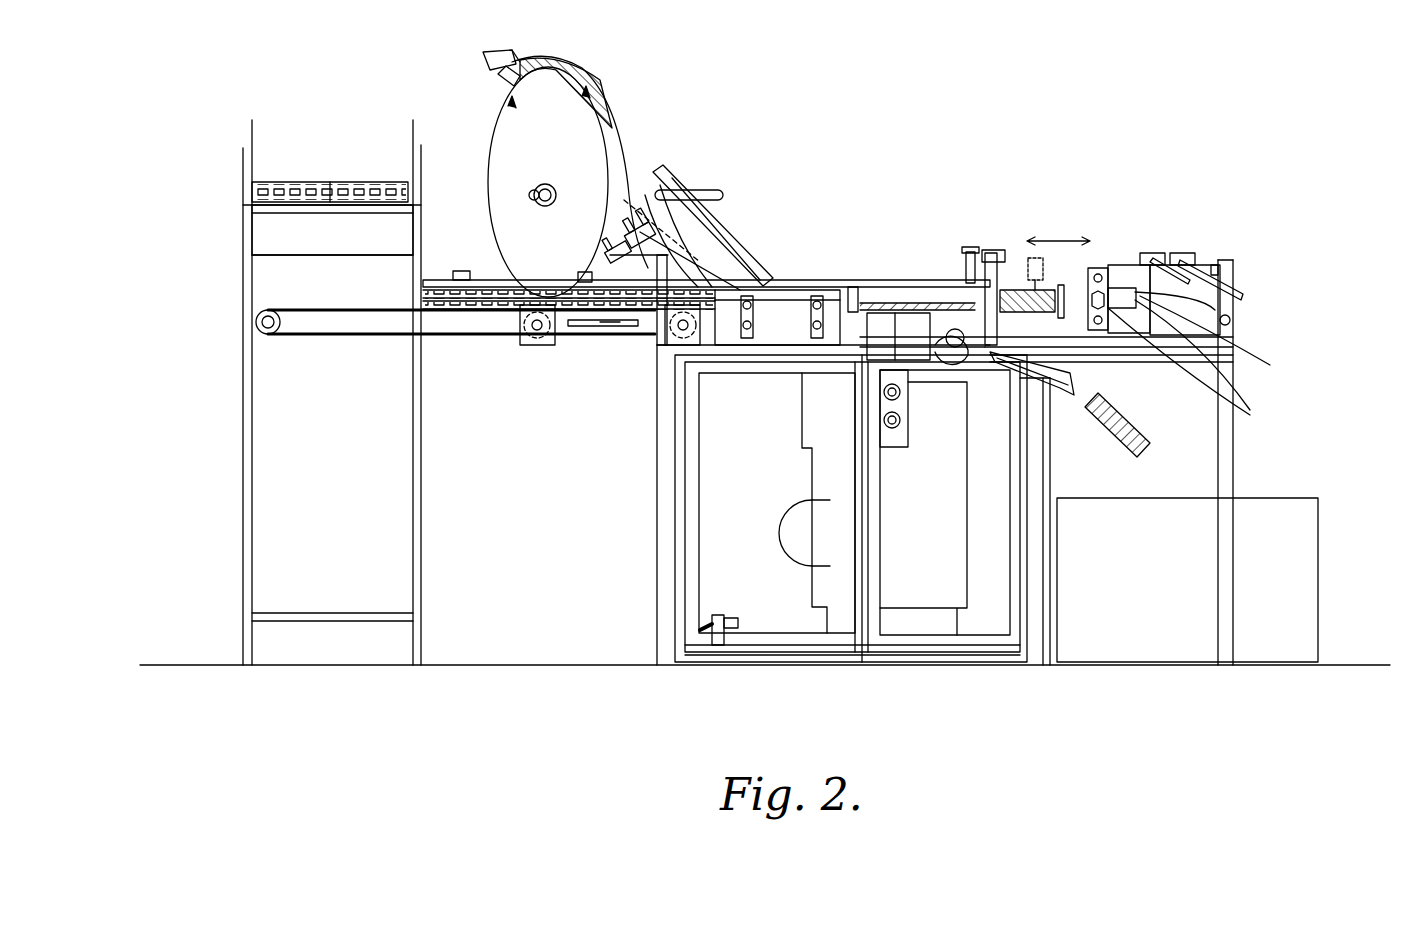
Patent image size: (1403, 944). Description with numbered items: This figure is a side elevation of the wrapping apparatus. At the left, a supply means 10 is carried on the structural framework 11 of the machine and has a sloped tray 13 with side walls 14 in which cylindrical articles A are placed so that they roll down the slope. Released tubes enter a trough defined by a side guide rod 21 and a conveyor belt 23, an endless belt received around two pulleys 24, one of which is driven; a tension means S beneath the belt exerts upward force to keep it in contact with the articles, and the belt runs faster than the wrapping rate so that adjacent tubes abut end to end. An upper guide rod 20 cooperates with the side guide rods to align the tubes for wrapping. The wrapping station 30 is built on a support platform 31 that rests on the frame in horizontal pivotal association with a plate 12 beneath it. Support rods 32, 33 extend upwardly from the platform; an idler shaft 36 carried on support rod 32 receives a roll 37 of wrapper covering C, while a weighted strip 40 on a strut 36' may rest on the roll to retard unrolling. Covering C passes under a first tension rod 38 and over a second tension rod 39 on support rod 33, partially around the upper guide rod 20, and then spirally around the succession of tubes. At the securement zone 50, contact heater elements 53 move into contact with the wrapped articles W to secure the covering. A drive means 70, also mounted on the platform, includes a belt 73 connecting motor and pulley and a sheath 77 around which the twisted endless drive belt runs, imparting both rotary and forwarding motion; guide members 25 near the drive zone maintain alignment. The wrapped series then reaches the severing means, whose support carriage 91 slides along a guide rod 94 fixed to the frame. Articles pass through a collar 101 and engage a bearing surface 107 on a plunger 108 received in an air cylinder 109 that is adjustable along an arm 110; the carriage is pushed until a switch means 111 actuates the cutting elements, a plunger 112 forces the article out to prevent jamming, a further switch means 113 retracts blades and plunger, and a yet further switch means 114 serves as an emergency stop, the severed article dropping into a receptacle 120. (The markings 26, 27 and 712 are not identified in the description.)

The supply means 10 is at (332, 130).
The structural framework 11 is at (421, 492).
The plate 12 is at (730, 648).
The sloped tray 13 is at (320, 208).
The side walls 14 is at (243, 152).
The cylindrical articles A is at (318, 182).
The upper guide rod 20 is at (430, 280).
The side guide rod 21 is at (463, 300).
The conveyor belt 23 is at (340, 334).
The pulleys 24 is at (272, 335).
The guide members 25 is at (893, 298).
The stop 26 is at (460, 272).
The stop 27 is at (578, 275).
The wrapping station 30 is at (707, 157).
The support platform 31 is at (930, 640).
The support rod 32 is at (796, 256).
The support rod 33 is at (712, 258).
The idler shaft 36 is at (713, 224).
The strut 36' is at (479, 77).
The roll 37 is at (556, 156).
The first tension rod 38 is at (705, 240).
The second tension rod 39 is at (608, 330).
The weighted strip 40 is at (553, 57).
The wrapper covering C is at (612, 160).
The tension means S is at (598, 322).
The securement zone 50 is at (764, 382).
The contact heater elements 53 is at (800, 290).
The drive means 70 is at (928, 255).
The belt 73 is at (912, 350).
The sheath 77 is at (862, 352).
The support carriage 91 is at (1180, 262).
The guide rod 94 is at (1240, 262).
The collar 101 is at (1005, 272).
The bearing surface 107 is at (1075, 345).
The plunger 108 is at (1090, 262).
The air cylinder 109 is at (1225, 305).
The arm 110 is at (1135, 255).
The switch means 111 is at (995, 255).
The plunger 112 is at (663, 556).
The switch means 113 is at (1190, 256).
The switch means 114 is at (1230, 262).
The receptacle 120 is at (1315, 585).
The opening 712 is at (770, 543).
The wrapped articles W is at (984, 214).